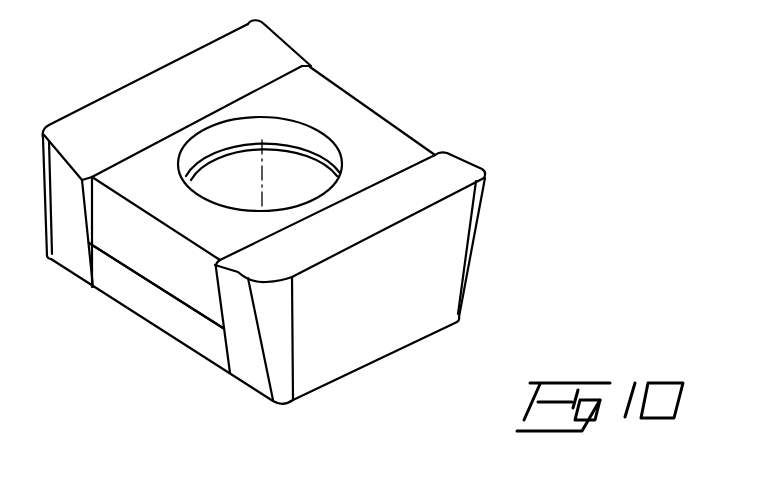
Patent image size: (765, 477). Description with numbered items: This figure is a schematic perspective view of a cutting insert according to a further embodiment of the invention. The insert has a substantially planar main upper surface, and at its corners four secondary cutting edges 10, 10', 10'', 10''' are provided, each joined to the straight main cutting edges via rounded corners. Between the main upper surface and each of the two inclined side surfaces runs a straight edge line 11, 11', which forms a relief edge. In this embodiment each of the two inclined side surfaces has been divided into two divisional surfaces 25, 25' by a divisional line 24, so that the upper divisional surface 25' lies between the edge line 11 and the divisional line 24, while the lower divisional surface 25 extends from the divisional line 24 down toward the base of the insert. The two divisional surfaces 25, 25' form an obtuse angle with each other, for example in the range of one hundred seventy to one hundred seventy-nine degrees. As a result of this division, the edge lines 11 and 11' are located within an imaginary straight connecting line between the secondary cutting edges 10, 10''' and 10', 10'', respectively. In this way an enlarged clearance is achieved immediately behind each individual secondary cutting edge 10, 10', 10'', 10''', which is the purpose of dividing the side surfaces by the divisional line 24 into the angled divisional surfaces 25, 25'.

The secondary cutting edge 10 is at (82, 200).
The secondary cutting edge 10' is at (301, 33).
The secondary cutting edge 10'' is at (419, 185).
The secondary cutting edge 10''' is at (274, 316).
The edge line 11 is at (170, 218).
The edge line 11' is at (373, 105).
The divisional line 24 is at (188, 300).
The divisional surface 25 is at (138, 311).
The divisional surface 25' is at (156, 245).